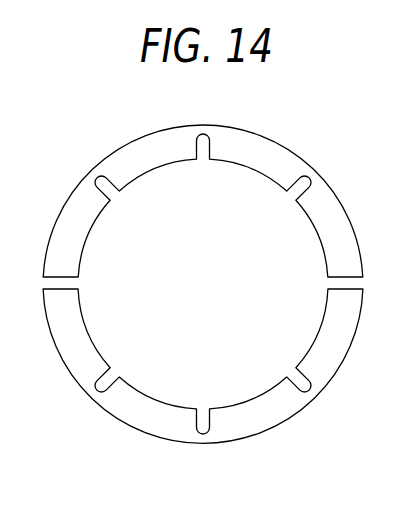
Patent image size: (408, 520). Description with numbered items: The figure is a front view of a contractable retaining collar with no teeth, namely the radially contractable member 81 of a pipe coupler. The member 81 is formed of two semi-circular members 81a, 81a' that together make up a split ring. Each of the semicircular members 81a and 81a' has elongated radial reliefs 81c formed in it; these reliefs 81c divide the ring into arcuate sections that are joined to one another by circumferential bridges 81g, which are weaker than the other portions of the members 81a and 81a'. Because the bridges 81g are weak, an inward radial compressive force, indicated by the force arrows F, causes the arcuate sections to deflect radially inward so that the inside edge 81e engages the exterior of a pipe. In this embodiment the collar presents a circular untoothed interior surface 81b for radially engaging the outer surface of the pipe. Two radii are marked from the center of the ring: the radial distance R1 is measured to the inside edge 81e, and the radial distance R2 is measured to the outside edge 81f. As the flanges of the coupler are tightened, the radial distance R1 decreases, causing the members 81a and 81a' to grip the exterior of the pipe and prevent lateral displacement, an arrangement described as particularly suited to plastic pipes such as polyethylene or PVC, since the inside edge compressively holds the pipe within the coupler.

The radially contractable member 81 is at (193, 263).
The semi-circular member 81a is at (193, 201).
The semi-circular member 81a' is at (199, 368).
The circular untoothed interior surface 81b is at (95, 343).
The radial reliefs 81c is at (113, 371).
The inside edge 81e is at (308, 220).
The outside edge 81f is at (337, 197).
The circumferential bridges 81g is at (88, 398).
The force arrows F is at (135, 137).
The radial distance to inside edge R1 is at (276, 182).
The radial distance to outside edge R2 is at (57, 220).